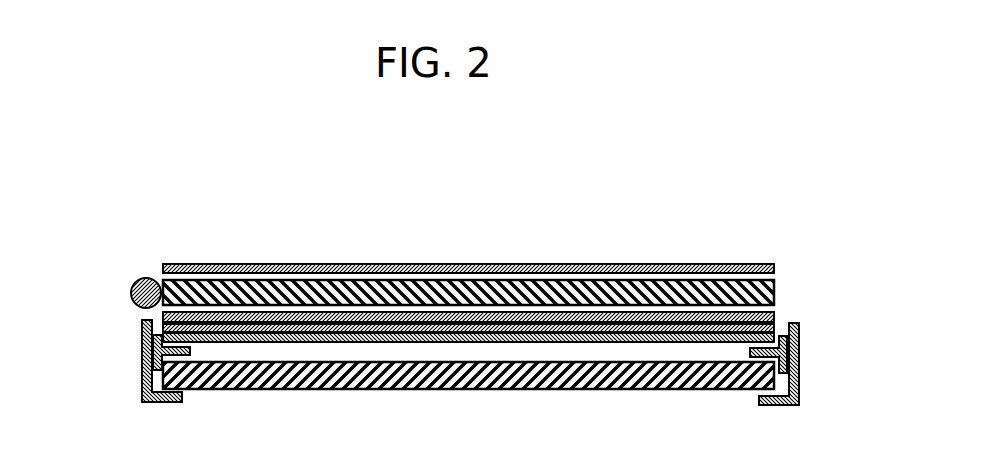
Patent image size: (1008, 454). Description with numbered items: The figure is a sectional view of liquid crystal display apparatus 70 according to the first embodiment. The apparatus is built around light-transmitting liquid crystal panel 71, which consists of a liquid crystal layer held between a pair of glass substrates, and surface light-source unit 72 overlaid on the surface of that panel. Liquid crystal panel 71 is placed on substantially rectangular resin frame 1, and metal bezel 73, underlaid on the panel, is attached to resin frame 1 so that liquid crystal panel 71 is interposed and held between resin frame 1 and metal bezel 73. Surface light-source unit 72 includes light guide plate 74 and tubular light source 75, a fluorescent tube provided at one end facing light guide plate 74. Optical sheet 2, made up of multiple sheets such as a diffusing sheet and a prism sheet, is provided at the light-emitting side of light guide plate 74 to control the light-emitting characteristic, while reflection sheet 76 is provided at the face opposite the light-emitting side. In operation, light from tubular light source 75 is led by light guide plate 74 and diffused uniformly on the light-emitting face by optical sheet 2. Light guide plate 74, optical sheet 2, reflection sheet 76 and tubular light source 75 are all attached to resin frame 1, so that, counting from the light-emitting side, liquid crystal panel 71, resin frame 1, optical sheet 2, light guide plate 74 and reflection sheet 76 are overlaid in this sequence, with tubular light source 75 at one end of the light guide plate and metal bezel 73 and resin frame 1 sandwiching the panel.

The liquid crystal display apparatus 70 is at (632, 166).
The surface light-source unit 72 is at (808, 262).
The reflection sheet 76 is at (665, 265).
The light guide plate 74 is at (523, 302).
The optical sheet 2 is at (579, 327).
The tubular light source 75 is at (142, 279).
The metal bezel 73 is at (143, 367).
The resin frame 1 is at (183, 355).
The liquid crystal panel 71 is at (712, 377).